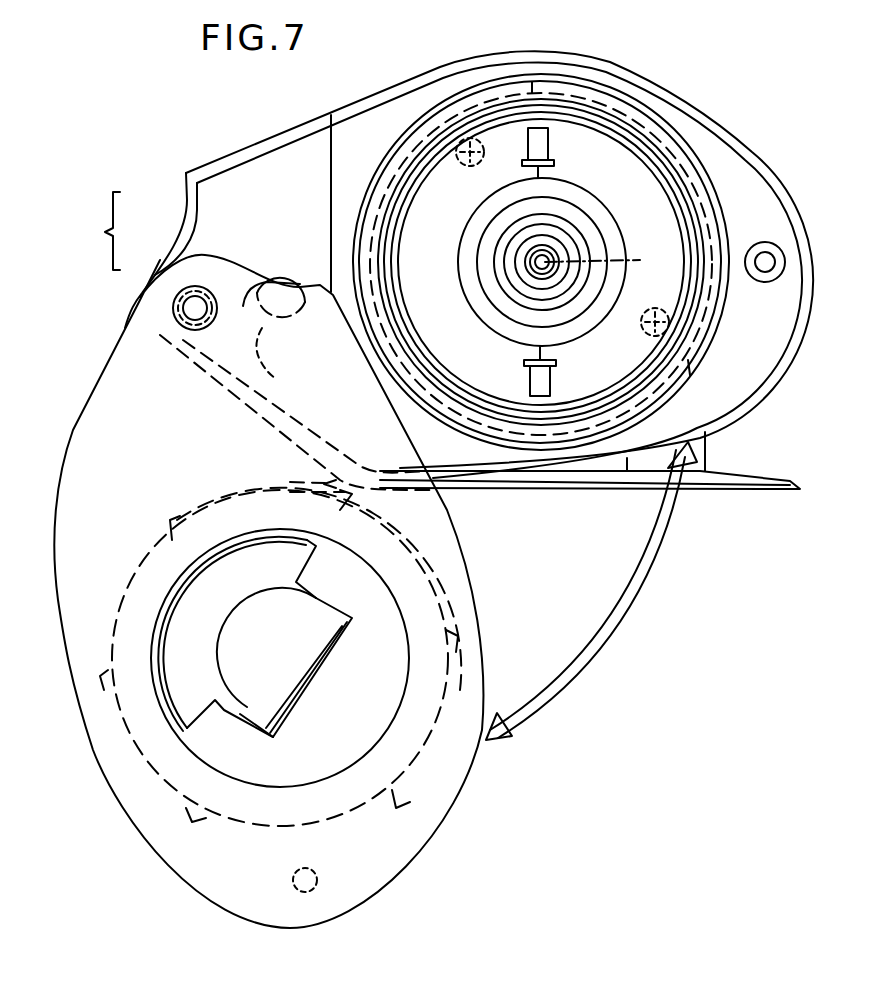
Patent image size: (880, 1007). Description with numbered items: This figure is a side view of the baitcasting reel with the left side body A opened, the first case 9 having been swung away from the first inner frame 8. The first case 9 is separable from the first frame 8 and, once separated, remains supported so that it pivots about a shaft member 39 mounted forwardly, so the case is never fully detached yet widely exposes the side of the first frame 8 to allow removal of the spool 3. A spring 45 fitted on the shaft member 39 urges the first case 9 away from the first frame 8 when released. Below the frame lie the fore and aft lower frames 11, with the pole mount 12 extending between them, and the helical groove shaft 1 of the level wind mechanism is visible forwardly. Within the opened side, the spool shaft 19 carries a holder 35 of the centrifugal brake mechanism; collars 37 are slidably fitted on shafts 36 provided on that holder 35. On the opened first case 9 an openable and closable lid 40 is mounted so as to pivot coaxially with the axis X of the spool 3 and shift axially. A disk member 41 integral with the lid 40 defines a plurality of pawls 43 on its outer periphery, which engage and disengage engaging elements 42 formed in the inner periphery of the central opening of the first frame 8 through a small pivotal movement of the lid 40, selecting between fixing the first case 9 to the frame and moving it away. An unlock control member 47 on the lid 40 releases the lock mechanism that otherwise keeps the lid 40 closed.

The helical groove shaft 1 is at (274, 339).
The spool 3 is at (385, 243).
The first inner frame 8 is at (178, 233).
The first case 9 is at (137, 322).
The left side body A is at (100, 231).
The lower frames 11 is at (706, 448).
The pole mount 12 is at (718, 492).
The spool shaft 19 is at (555, 248).
The holder 35 is at (478, 268).
The shafts 36 is at (525, 168).
The collars 37 is at (548, 145).
The shaft member 39 is at (196, 314).
The lid 40 is at (168, 600).
The disk member 41 is at (160, 545).
The engaging elements 42 is at (400, 182).
The pawls 43 is at (222, 482).
The spring 45 is at (197, 284).
The unlock control member 47 is at (238, 690).
The axis X is at (604, 261).